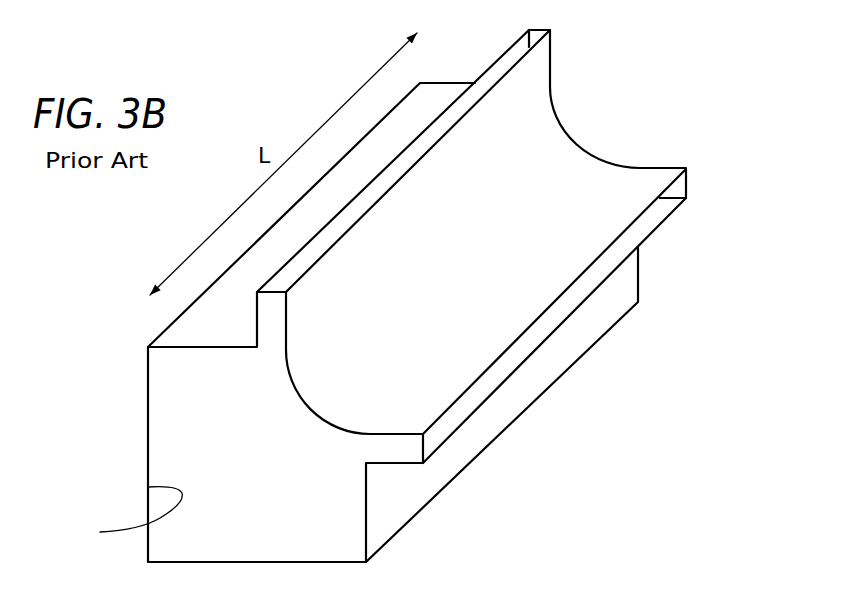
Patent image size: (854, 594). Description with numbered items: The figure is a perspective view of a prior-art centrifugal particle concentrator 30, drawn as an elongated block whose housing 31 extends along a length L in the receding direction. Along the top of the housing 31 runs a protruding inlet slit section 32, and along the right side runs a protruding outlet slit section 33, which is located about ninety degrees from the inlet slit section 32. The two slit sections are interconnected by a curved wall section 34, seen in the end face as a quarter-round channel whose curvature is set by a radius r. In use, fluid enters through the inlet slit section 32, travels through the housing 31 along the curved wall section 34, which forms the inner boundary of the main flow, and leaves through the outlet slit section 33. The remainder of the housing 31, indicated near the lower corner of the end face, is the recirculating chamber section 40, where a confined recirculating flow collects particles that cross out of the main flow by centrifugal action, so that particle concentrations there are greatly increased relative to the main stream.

The centrifugal particle concentrator 30 is at (606, 106).
The housing 31 is at (148, 425).
The inlet slit section 32 is at (423, 146).
The outlet slit section 33 is at (567, 303).
The curved wall section 34 is at (413, 366).
The recirculating chamber section 40 is at (127, 516).